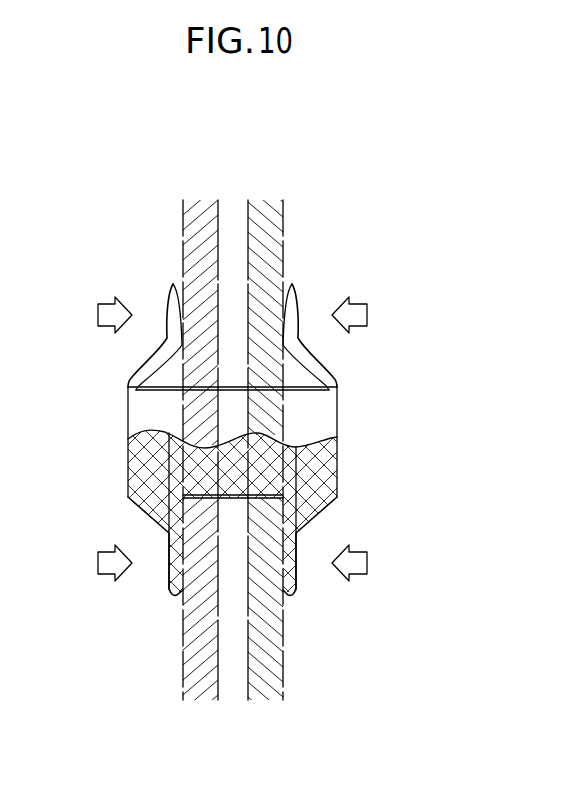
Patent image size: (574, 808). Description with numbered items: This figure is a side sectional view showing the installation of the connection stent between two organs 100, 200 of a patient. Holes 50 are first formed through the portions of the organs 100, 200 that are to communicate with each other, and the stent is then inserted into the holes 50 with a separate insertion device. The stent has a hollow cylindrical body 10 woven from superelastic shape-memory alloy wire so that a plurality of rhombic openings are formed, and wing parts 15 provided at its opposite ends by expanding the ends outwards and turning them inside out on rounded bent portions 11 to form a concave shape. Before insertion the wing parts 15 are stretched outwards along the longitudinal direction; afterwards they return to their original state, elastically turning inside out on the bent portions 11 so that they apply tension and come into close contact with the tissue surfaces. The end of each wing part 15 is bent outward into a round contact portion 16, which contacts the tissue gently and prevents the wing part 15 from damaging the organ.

The hollow cylindrical body 10 is at (254, 441).
The bent portion 11 is at (128, 500).
The wing part 15 is at (170, 300).
The round contact portion 16 is at (283, 323).
The hole 50 is at (226, 370).
The organ 100 is at (193, 253).
The organ 200 is at (275, 255).